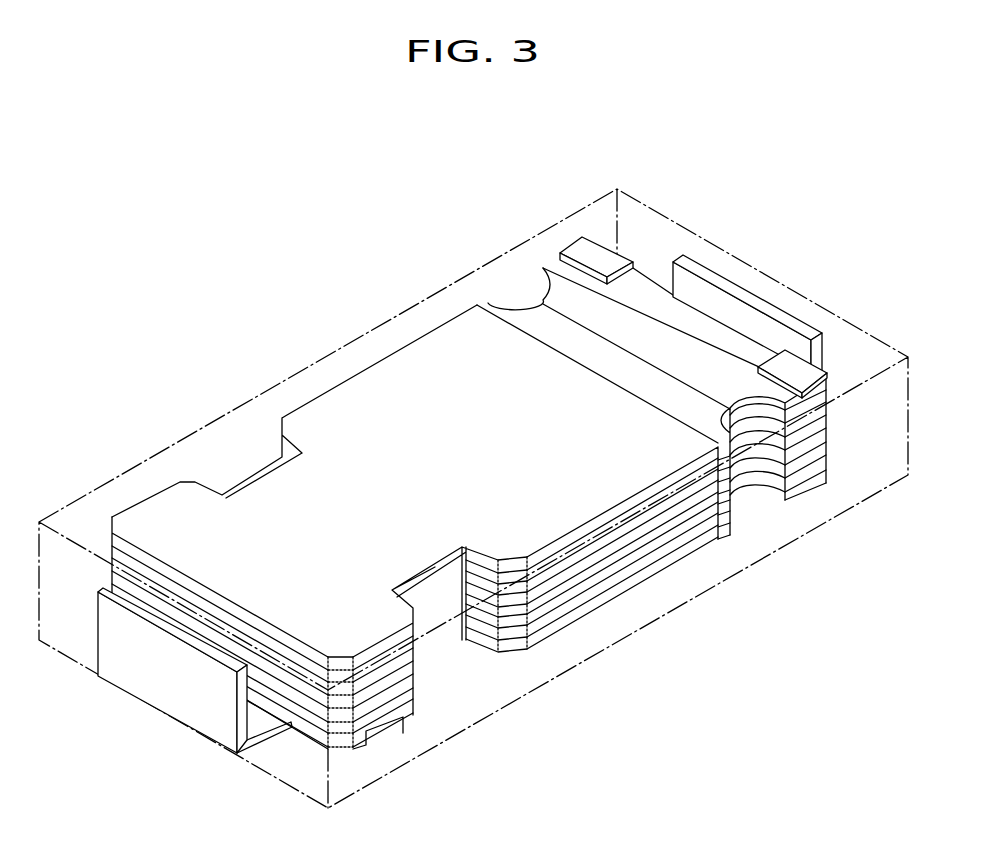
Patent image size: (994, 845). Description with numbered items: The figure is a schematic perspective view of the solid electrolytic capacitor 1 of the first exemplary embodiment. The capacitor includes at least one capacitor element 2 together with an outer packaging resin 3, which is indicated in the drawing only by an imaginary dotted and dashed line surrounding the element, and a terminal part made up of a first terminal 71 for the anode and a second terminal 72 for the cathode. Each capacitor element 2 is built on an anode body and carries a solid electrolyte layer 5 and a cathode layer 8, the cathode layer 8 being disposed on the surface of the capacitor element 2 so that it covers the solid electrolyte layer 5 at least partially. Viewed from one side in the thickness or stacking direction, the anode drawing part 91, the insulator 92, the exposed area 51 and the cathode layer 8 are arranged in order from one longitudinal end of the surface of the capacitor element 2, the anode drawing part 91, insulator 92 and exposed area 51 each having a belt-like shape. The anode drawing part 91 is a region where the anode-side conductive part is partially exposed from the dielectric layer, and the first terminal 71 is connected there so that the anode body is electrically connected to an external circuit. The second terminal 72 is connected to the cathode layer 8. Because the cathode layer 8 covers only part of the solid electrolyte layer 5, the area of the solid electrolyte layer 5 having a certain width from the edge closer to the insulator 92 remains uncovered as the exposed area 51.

The solid electrolytic capacitor 1 is at (188, 477).
The capacitor element 2 is at (397, 405).
The outer packaging resin 3 is at (817, 303).
The solid electrolyte layer 5 is at (489, 303).
The cathode layer 8 is at (447, 348).
The exposed area 51 is at (533, 327).
The first terminal 71 is at (738, 293).
The second terminal 72 is at (143, 687).
The anode drawing part 91 is at (650, 297).
The insulator 92 is at (635, 318).